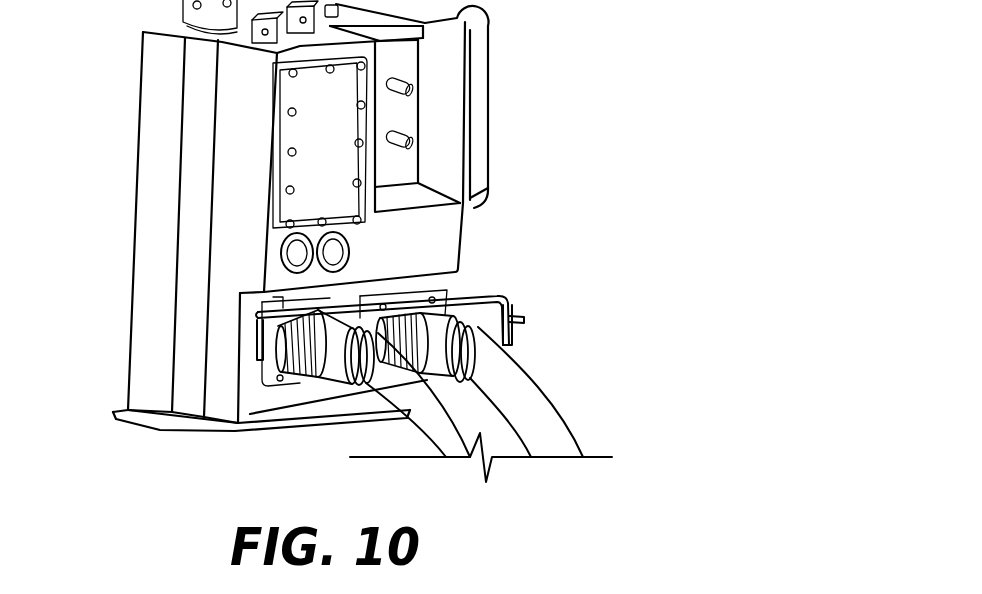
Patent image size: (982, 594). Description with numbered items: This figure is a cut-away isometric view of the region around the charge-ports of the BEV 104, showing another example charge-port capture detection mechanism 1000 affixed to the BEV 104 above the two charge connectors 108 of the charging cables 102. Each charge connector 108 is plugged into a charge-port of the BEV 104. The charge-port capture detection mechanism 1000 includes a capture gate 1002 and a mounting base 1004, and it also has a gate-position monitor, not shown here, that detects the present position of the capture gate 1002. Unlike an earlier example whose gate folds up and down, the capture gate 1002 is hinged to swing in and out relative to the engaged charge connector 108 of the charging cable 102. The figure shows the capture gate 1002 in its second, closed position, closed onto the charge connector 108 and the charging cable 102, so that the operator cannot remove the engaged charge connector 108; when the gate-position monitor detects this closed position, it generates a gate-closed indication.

The charge-port capture detection mechanism 1000 is at (228, 317).
The BEV 104 is at (452, 232).
The charge connector 108 is at (387, 303).
The capture gate 1002 is at (487, 302).
The mounting base 1004 is at (545, 343).
The charging cable 102 is at (444, 455).